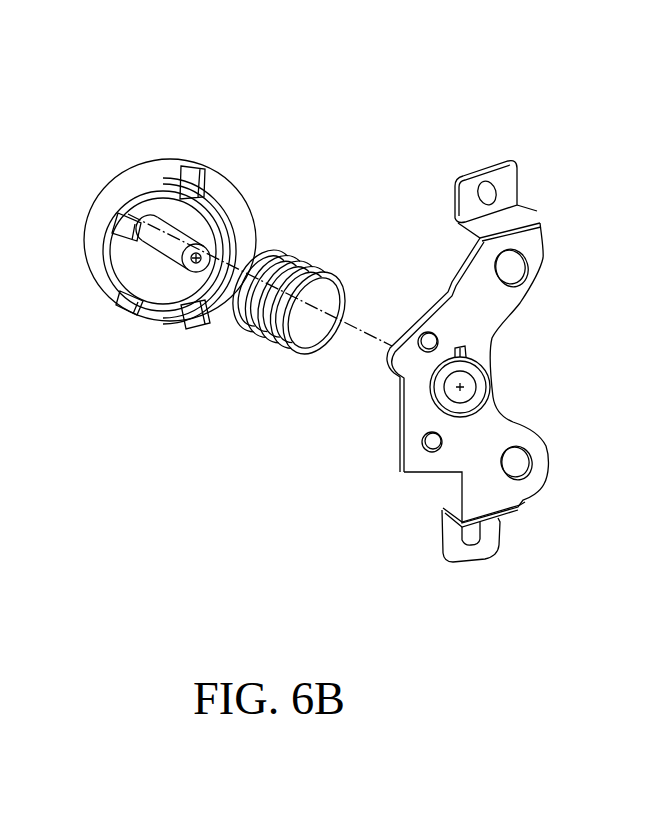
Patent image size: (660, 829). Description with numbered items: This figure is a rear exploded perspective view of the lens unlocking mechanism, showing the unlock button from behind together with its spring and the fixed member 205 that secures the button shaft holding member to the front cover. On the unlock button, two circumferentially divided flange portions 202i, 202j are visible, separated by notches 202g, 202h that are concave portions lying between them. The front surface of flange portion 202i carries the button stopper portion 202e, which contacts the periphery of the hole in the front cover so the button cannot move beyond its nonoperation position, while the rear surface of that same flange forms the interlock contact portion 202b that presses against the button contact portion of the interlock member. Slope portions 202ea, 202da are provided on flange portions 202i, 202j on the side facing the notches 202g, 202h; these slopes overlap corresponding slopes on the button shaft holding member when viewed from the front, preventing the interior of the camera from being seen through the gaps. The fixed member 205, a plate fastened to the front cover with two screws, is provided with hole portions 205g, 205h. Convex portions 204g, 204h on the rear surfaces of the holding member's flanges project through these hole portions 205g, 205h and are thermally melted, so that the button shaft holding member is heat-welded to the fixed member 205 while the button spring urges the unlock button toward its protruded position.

The interlock contact portion 202b is at (257, 231).
The flange portion 202i is at (240, 182).
The notch 202g is at (152, 192).
The flange portion 202j is at (102, 266).
The notch 202h is at (161, 313).
The button stopper portion 202e is at (183, 165).
The slope portion 202ea is at (200, 166).
The slope portion 202da is at (129, 218).
The fixed member 205 is at (503, 437).
The hole portion 205g is at (422, 333).
The hole portion 205h is at (430, 451).
The convex portion 204g is at (431, 342).
The convex portion 204h is at (431, 443).